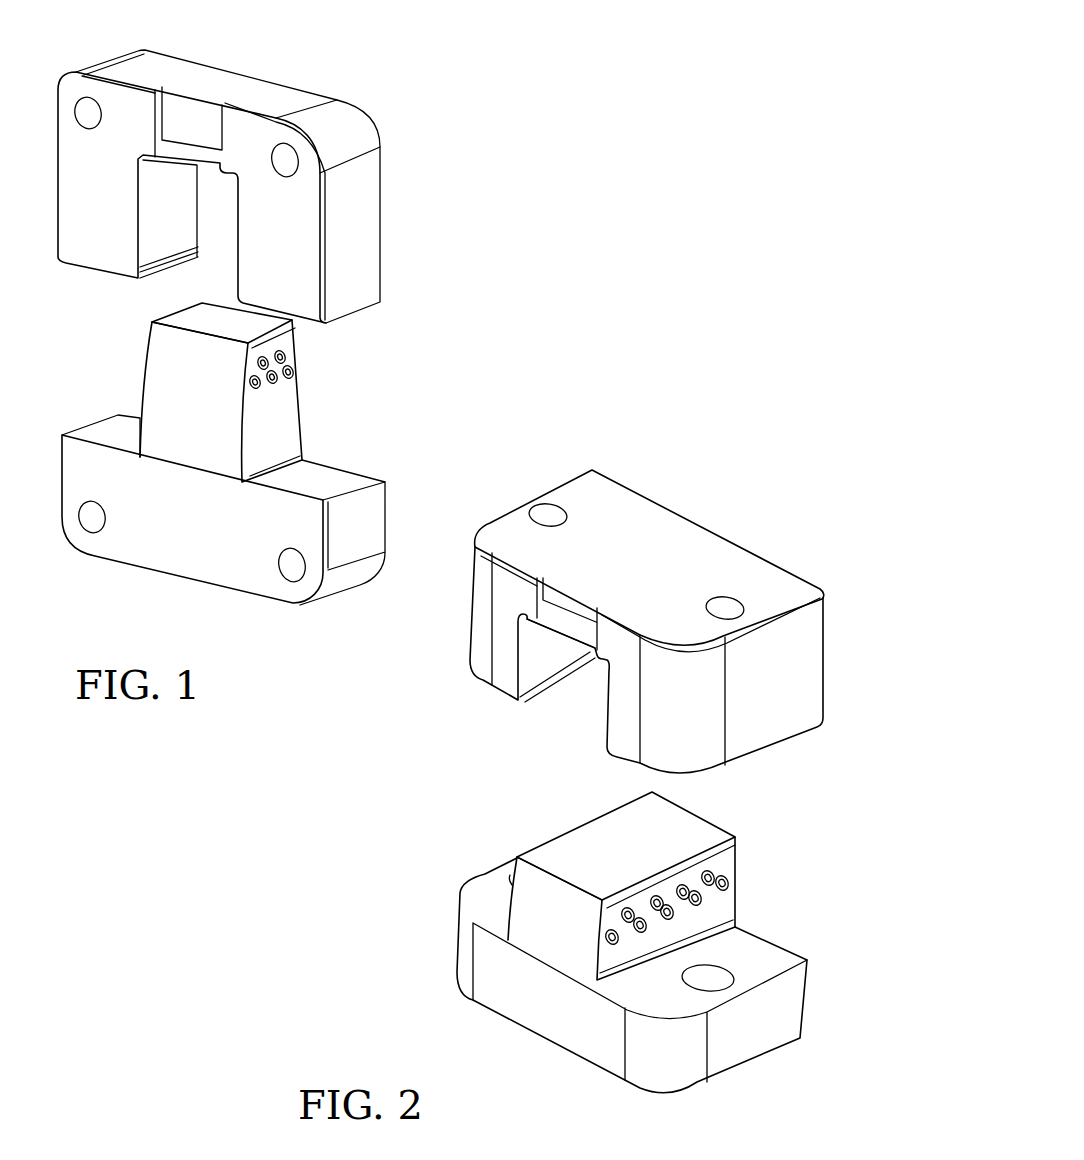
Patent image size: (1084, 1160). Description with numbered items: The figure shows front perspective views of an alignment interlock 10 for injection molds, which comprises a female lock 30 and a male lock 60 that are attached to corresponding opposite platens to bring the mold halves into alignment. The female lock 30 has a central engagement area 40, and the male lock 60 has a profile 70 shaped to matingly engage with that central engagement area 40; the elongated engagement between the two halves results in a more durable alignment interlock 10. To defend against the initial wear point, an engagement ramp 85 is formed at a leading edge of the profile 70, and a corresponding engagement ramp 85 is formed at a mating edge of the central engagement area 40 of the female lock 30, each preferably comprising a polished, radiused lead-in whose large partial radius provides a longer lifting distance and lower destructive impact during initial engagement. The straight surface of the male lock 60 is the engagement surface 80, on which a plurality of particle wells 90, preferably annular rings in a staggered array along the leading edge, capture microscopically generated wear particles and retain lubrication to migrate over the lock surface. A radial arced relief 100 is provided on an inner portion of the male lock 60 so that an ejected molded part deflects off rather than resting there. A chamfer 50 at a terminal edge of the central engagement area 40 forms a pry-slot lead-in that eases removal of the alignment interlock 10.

In FIG. 1, the alignment interlock 10 is at (430, 275).
In FIG. 2, the alignment interlock 10 is at (370, 813).
In FIG. 1, the female lock 30 is at (406, 162).
In FIG. 2, the female lock 30 is at (748, 507).
In FIG. 1, the central engagement area 40 is at (149, 184).
In FIG. 2, the central engagement area 40 is at (612, 700).
In FIG. 1, the chamfer 50 is at (209, 156).
In FIG. 2, the chamfer 50 is at (577, 625).
In FIG. 1, the male lock 60 is at (360, 428).
In FIG. 2, the male lock 60 is at (550, 804).
In FIG. 1, the profile 70 is at (152, 322).
In FIG. 2, the profile 70 is at (517, 857).
In FIG. 1, the engagement surface 80 is at (293, 391).
In FIG. 2, the engagement surface 80 is at (615, 953).
In FIG. 1, the engagement ramp 85 is at (170, 263).
In FIG. 1, the particle wells 90 is at (296, 364).
In FIG. 2, the particle wells 90 is at (732, 888).
In FIG. 1, the radial arced relief 100 is at (175, 384).
In FIG. 2, the radial arced relief 100 is at (545, 893).